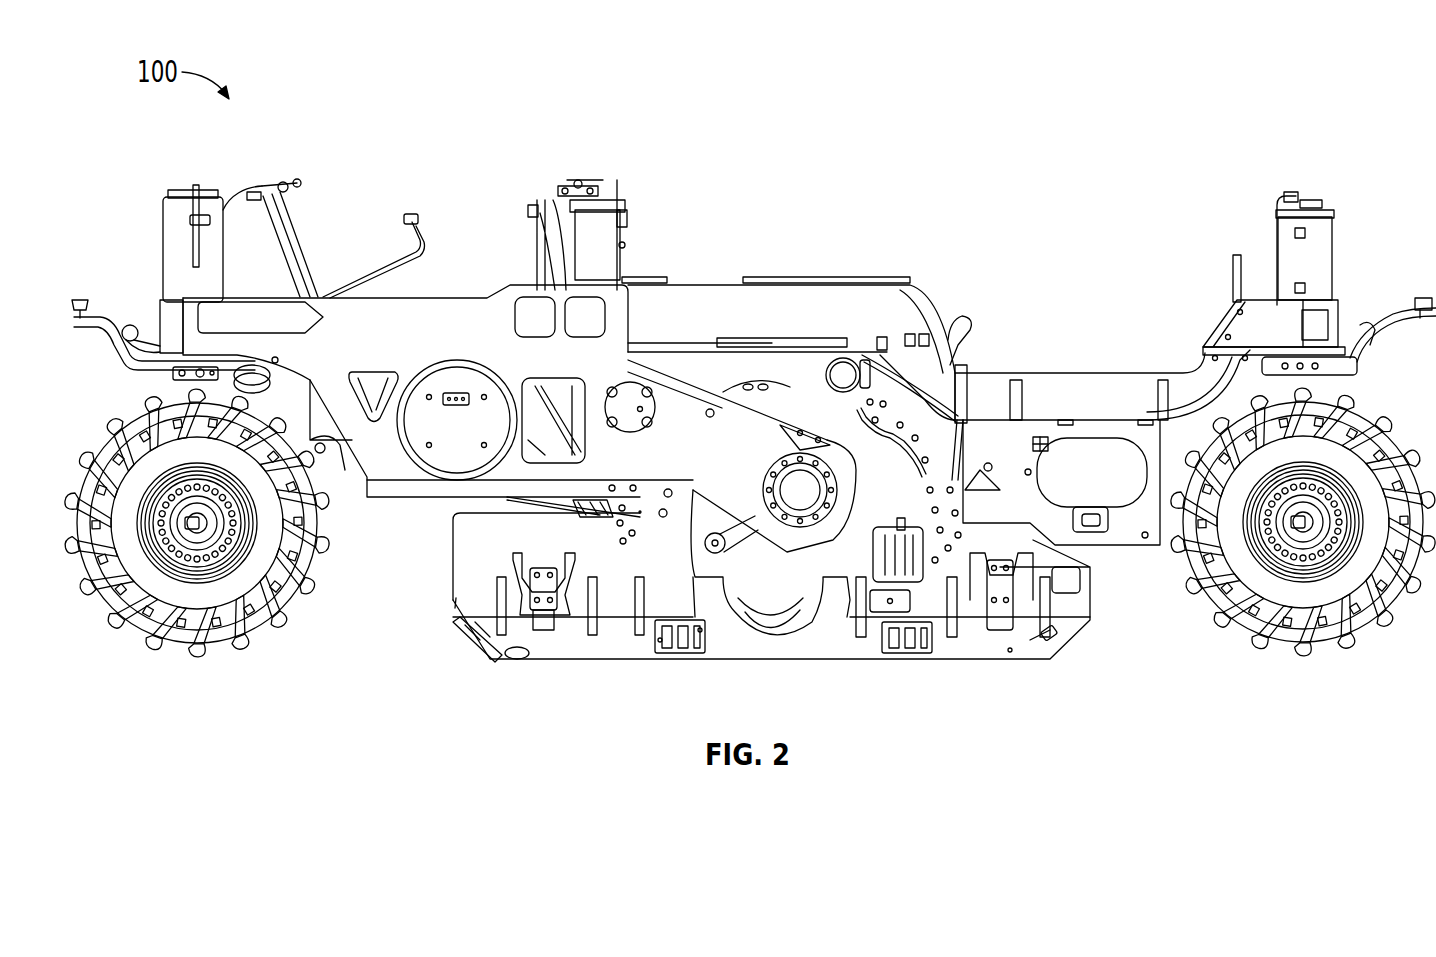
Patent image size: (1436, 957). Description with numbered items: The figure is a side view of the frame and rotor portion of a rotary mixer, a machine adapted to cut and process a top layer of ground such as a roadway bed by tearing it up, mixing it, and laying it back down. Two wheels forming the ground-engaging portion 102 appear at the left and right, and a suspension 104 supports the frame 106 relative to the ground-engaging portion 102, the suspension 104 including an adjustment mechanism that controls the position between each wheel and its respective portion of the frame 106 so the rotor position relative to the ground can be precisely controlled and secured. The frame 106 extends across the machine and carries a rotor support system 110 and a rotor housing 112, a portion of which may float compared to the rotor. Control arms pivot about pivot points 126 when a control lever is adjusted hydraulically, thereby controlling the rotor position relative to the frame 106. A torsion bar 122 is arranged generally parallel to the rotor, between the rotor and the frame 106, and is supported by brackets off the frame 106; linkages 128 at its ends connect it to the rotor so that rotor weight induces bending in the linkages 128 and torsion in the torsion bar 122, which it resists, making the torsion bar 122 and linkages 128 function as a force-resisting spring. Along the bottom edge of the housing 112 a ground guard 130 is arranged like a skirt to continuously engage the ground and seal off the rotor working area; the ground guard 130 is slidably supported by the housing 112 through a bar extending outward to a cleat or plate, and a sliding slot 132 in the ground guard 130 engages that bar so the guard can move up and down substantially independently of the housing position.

The ground-engaging portion 102 is at (330, 678).
The suspension 104 is at (163, 242).
The frame 106 is at (683, 308).
The rotor support system 110 is at (638, 522).
The rotor housing 112 is at (455, 606).
The torsion bar 122 is at (914, 300).
The pivot points 126 is at (456, 402).
The linkages 128 is at (840, 368).
The ground guard 130 is at (830, 650).
The sliding slot 132 is at (540, 625).